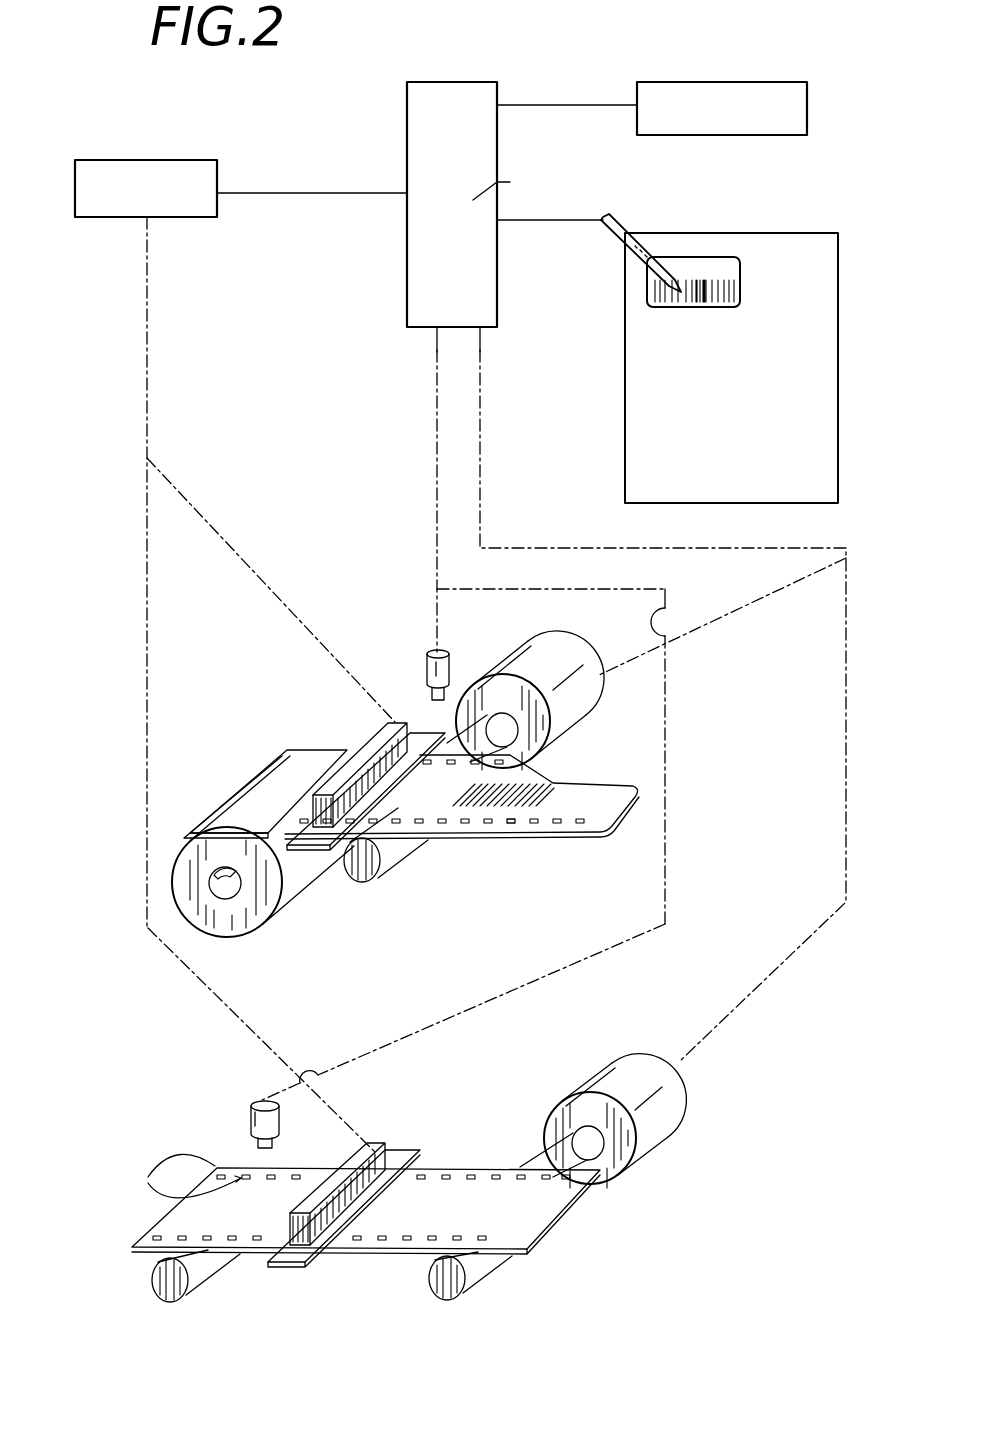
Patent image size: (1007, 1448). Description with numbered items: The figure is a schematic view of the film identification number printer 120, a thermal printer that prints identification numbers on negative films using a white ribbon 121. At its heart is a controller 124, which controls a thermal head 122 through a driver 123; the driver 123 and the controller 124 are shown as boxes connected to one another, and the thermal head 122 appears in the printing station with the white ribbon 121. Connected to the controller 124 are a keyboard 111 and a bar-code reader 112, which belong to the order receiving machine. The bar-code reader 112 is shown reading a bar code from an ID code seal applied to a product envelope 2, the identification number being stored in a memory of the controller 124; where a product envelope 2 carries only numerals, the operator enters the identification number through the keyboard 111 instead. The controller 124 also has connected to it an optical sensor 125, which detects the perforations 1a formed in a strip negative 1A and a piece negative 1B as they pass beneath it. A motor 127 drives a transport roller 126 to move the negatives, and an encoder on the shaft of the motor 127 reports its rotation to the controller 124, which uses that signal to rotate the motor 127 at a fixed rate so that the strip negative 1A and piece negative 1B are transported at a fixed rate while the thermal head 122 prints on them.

The keyboard 111 is at (773, 135).
The bar-code reader 112 is at (624, 257).
The film identification number printer 120 is at (118, 412).
The white ribbon 121 is at (317, 842).
The thermal head 122 is at (368, 747).
The driver 123 is at (172, 160).
The controller 124 is at (407, 260).
The optical sensor 125 is at (427, 672).
The transport roller 126 is at (394, 852).
The motor 127 is at (528, 655).
The product envelope 2 is at (650, 388).
The perforations 1a is at (509, 825).
The strip negative 1A is at (578, 832).
The piece negative 1B is at (553, 1207).